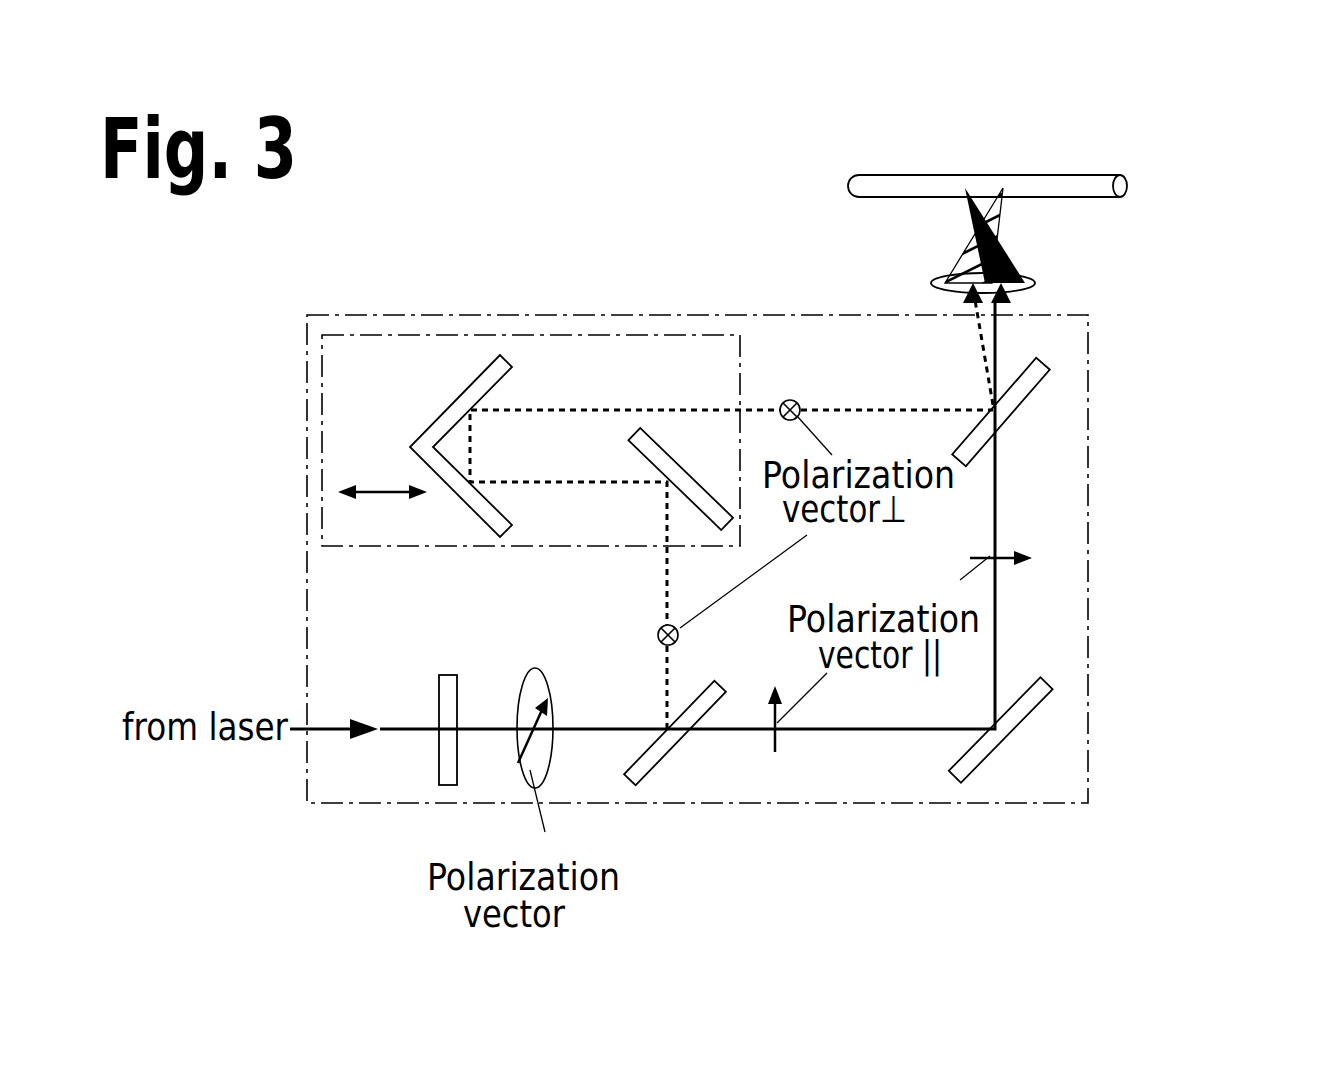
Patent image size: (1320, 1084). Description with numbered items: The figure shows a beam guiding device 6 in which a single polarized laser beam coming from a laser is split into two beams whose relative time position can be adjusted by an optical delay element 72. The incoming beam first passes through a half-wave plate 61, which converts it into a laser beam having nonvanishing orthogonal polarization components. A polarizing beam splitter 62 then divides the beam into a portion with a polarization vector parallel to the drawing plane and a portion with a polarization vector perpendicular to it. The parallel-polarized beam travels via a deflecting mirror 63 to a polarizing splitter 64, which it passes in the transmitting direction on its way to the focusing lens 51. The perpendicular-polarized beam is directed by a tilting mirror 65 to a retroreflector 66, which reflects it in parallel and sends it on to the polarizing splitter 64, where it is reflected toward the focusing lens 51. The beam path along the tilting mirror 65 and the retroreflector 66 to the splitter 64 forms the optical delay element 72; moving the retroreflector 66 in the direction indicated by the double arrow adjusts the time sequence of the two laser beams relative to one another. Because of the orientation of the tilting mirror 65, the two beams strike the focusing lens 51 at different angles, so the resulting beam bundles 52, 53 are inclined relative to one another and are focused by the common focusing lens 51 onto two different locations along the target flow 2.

The target flow 2 is at (1110, 182).
The beam guiding device 6 is at (1088, 635).
The focusing lens 51 is at (935, 277).
The beam bundle 52 is at (980, 347).
The beam bundle 53 is at (1005, 333).
The half-wave plate 61 is at (445, 765).
The polarizing beam splitter 62 is at (663, 743).
The deflecting mirror 63 is at (988, 742).
The polarizing splitter 64 is at (1018, 408).
The tilting mirror 65 is at (650, 452).
The retroreflector 66 is at (448, 420).
The optical delay element 72 is at (320, 462).